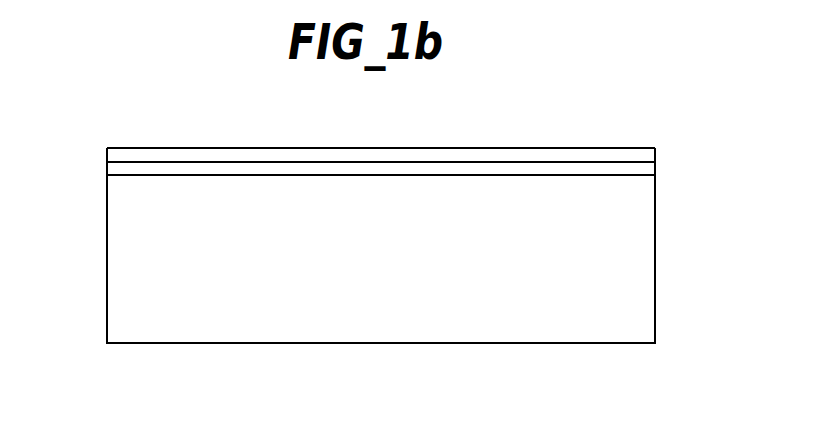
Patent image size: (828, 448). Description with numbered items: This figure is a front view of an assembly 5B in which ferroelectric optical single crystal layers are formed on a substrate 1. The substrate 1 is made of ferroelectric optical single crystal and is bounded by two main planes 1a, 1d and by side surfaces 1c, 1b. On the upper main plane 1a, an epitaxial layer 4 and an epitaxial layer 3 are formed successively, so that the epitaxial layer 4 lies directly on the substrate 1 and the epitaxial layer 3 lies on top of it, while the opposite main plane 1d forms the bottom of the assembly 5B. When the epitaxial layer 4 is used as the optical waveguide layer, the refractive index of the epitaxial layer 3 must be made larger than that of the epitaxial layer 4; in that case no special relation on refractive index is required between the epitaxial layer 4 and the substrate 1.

The substrate 1 is at (659, 204).
The main plane 1a is at (547, 174).
The side surface 1b is at (445, 194).
The side surface 1c is at (107, 247).
The main plane 1d is at (429, 344).
The epitaxial layer 3 is at (388, 153).
The epitaxial layer 4 is at (328, 168).
The assembly 5B is at (716, 128).